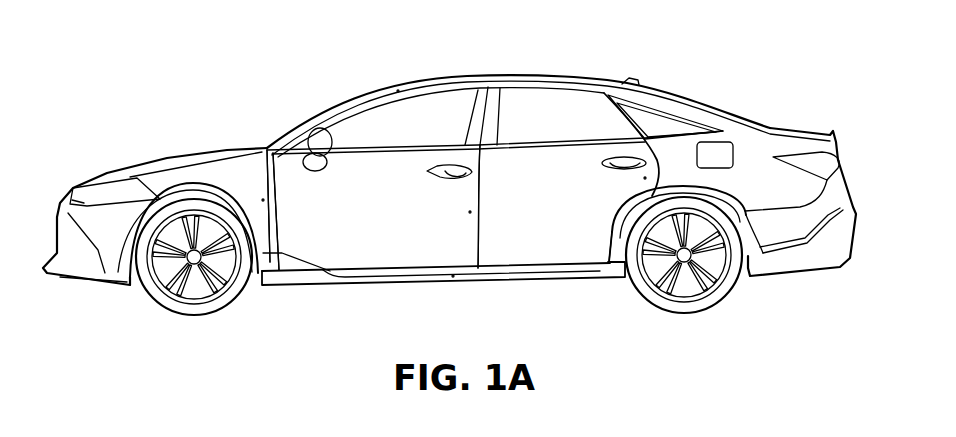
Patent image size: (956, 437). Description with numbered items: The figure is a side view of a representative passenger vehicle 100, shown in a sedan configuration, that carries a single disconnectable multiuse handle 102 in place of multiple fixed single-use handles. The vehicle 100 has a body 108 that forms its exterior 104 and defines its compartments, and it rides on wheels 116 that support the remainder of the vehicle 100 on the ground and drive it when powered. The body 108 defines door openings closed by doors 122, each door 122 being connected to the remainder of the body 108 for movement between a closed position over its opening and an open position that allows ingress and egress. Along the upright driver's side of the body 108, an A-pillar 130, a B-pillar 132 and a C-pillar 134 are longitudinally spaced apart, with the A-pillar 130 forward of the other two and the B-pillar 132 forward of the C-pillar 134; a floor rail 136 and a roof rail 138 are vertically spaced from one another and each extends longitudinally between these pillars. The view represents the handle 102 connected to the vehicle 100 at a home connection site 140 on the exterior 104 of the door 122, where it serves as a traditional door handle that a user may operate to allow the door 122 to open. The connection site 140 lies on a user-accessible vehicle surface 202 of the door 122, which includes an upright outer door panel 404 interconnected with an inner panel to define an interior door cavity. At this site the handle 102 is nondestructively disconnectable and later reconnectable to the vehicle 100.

The passenger vehicle 100 is at (315, 118).
The disconnectable handle 102 is at (472, 172).
The exterior 104 is at (339, 250).
The body 108 is at (403, 85).
The wheels 116 is at (162, 308).
The door 122 is at (285, 177).
The A-pillar 130 is at (262, 200).
The B-pillar 132 is at (470, 212).
The C-pillar 134 is at (645, 178).
The floor rail 136 is at (453, 277).
The roof rail 138 is at (398, 92).
The connection site 140 is at (465, 157).
The vehicle surface 202 is at (420, 208).
The outer door panel 404 is at (377, 261).